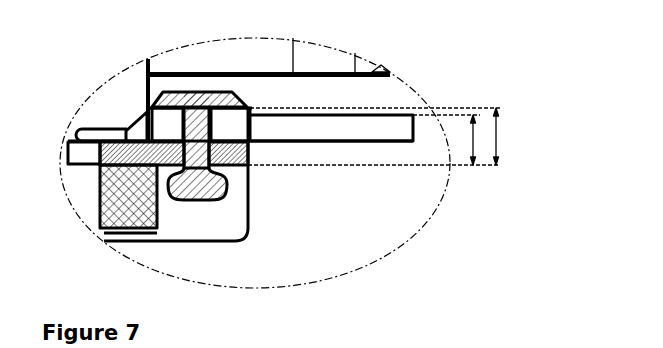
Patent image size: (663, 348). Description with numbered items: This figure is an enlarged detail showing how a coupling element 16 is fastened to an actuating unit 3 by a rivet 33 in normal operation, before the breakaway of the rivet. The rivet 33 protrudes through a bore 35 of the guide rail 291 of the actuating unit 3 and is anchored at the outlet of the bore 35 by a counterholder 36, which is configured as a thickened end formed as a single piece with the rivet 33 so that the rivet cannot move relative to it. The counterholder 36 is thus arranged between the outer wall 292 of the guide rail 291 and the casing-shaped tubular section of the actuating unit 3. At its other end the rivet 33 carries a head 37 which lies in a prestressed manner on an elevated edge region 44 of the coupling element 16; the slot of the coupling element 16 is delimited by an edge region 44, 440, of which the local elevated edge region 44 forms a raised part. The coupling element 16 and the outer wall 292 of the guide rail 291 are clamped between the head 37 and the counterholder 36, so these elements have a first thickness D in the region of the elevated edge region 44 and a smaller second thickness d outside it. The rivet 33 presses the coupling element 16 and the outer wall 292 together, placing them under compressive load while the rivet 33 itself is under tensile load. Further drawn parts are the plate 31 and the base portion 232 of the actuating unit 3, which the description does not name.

The actuating unit 3 is at (93, 178).
The coupling element 16 is at (147, 95).
The support plate 31 is at (390, 132).
The rivet 33 is at (193, 128).
The bore 35 is at (248, 159).
The counterholder 36 is at (202, 183).
The head 37 is at (185, 130).
The elevated edge region 44 is at (240, 115).
The base portion of frame 232 is at (101, 238).
The guide rail 291 is at (100, 153).
The outer wall 292 is at (138, 125).
The edge region 440 is at (310, 115).
The first thickness D is at (500, 138).
The second thickness d is at (474, 140).